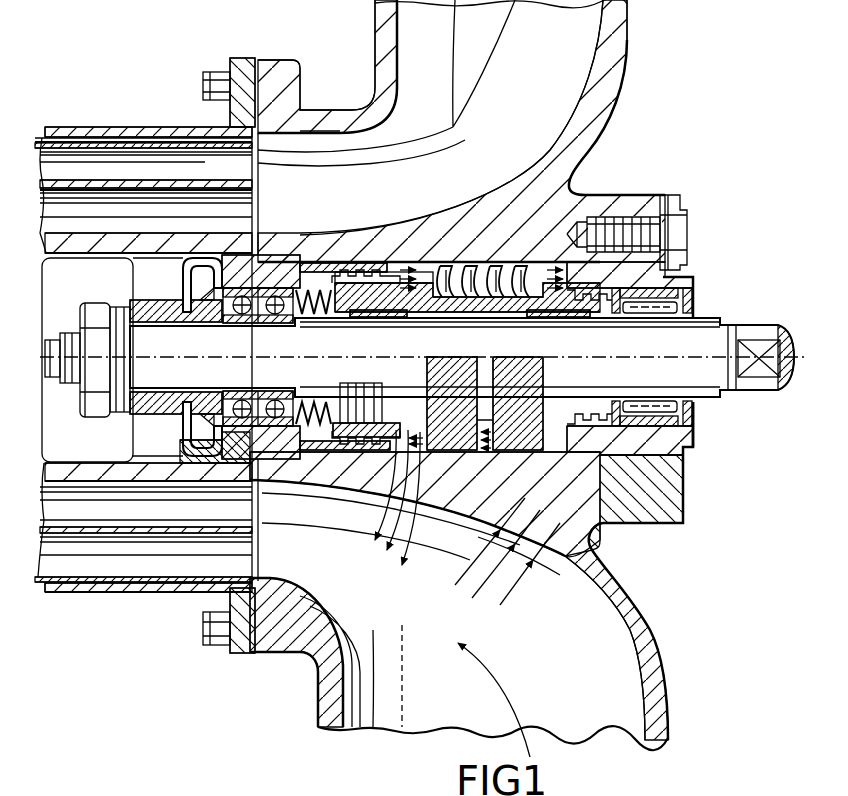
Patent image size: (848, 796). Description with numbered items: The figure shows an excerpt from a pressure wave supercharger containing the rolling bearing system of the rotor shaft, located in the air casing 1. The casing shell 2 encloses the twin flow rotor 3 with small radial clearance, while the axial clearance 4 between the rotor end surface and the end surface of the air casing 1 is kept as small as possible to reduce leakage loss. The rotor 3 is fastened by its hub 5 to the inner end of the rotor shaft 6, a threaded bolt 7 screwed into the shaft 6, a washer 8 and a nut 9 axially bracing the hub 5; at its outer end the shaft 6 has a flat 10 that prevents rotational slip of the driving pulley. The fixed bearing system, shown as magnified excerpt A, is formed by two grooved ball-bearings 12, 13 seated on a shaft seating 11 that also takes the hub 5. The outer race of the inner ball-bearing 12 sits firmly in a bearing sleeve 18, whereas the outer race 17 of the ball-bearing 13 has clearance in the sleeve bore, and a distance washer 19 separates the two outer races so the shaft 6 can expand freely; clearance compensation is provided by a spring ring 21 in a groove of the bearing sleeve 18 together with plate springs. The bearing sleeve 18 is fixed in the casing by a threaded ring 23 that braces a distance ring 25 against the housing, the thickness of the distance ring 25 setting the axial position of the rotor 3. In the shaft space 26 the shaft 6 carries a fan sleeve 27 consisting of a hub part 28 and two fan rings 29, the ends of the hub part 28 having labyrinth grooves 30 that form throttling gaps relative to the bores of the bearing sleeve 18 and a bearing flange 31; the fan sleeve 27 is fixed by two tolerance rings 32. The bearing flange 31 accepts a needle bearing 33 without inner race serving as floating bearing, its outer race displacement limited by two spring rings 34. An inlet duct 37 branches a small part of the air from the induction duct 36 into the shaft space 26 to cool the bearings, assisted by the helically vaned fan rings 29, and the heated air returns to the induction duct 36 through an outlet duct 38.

The air casing 1 is at (627, 35).
The casing shell 2 is at (83, 130).
The twin flow rotor 3 is at (55, 170).
The axial clearance 4 is at (207, 162).
The hub 5 is at (153, 306).
The rotor shaft 6 is at (767, 320).
The threaded bolt 7 is at (57, 388).
The washer 8 is at (113, 418).
The nut 9 is at (92, 408).
The flat 10 is at (760, 366).
The shaft seating 11 is at (150, 355).
The grooved ball-bearing 12 is at (263, 459).
The grooved ball-bearing 13 is at (288, 459).
The outer race 17 is at (237, 427).
The bearing sleeve 18 is at (190, 222).
The distance washer 19 is at (202, 542).
The spring ring 21 is at (330, 283).
The threaded ring 23 is at (380, 275).
The distance ring 25 is at (245, 258).
The shaft space 26 is at (557, 267).
The fan sleeve 27 is at (420, 255).
The hub part 28 is at (475, 312).
The fan rings 29 is at (363, 507).
The labyrinth grooves 30 is at (350, 452).
The bearing flange 31 is at (648, 193).
The tolerance rings 32 is at (452, 302).
The needle bearing 33 is at (673, 283).
The spring rings 34 is at (687, 440).
The induction duct 36 is at (420, 700).
The inlet duct 37 is at (507, 551).
The outlet duct 38 is at (405, 501).
The magnified excerpt A is at (186, 279).